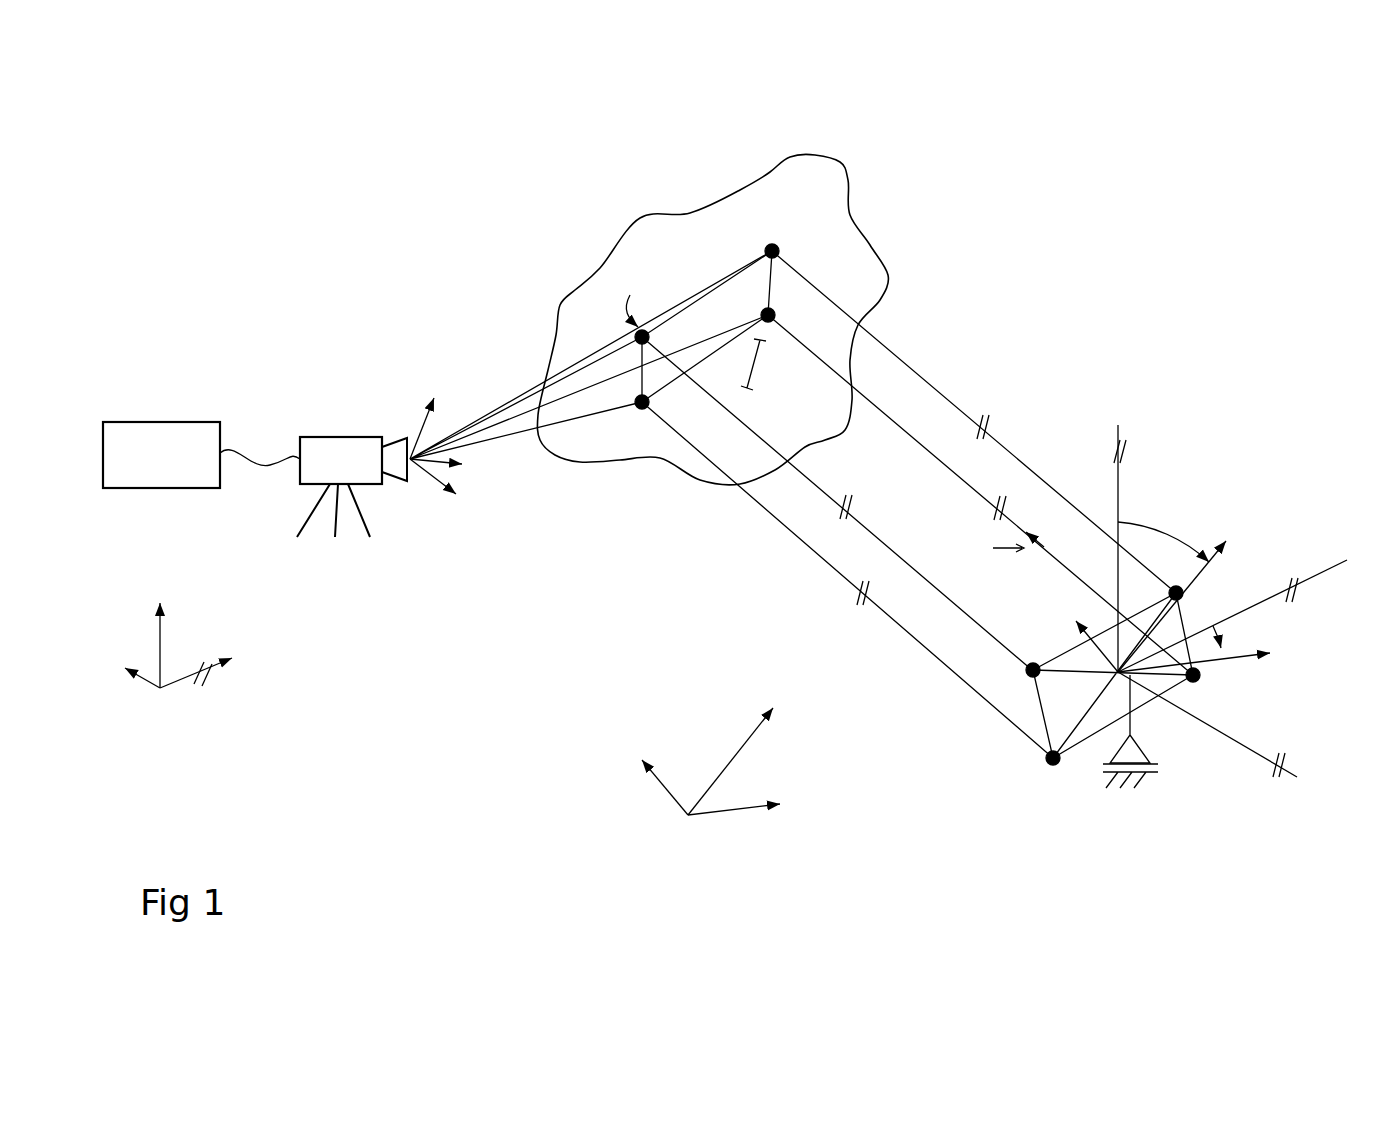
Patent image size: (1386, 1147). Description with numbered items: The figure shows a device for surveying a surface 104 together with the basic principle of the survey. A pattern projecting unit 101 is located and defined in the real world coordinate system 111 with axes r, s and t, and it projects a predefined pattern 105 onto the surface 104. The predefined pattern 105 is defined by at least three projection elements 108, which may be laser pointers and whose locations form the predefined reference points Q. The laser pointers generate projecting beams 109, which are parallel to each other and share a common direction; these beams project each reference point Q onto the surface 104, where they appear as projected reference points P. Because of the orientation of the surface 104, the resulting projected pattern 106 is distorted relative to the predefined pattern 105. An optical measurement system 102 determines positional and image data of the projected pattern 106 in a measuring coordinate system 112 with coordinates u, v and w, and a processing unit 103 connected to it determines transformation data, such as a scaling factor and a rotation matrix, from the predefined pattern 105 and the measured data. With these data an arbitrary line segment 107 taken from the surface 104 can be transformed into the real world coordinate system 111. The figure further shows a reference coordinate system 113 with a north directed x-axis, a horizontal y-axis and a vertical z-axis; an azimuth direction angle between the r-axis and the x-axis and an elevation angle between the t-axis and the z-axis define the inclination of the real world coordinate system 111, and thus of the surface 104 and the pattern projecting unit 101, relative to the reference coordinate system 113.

The pattern projecting unit 101 is at (1173, 769).
The optical measurement system 102 is at (337, 432).
The processing unit 103 is at (201, 455).
The surface 104 is at (850, 173).
The predefined pattern 105 is at (1040, 727).
The projected pattern 106 is at (706, 284).
The arbitrary line segment 107 is at (768, 363).
The projection elements 108 is at (1186, 581).
The projecting beams 109 is at (896, 413).
The real world coordinate system 111 is at (734, 824).
The measuring coordinate system 112 is at (480, 483).
The reference coordinate system 113 is at (258, 641).